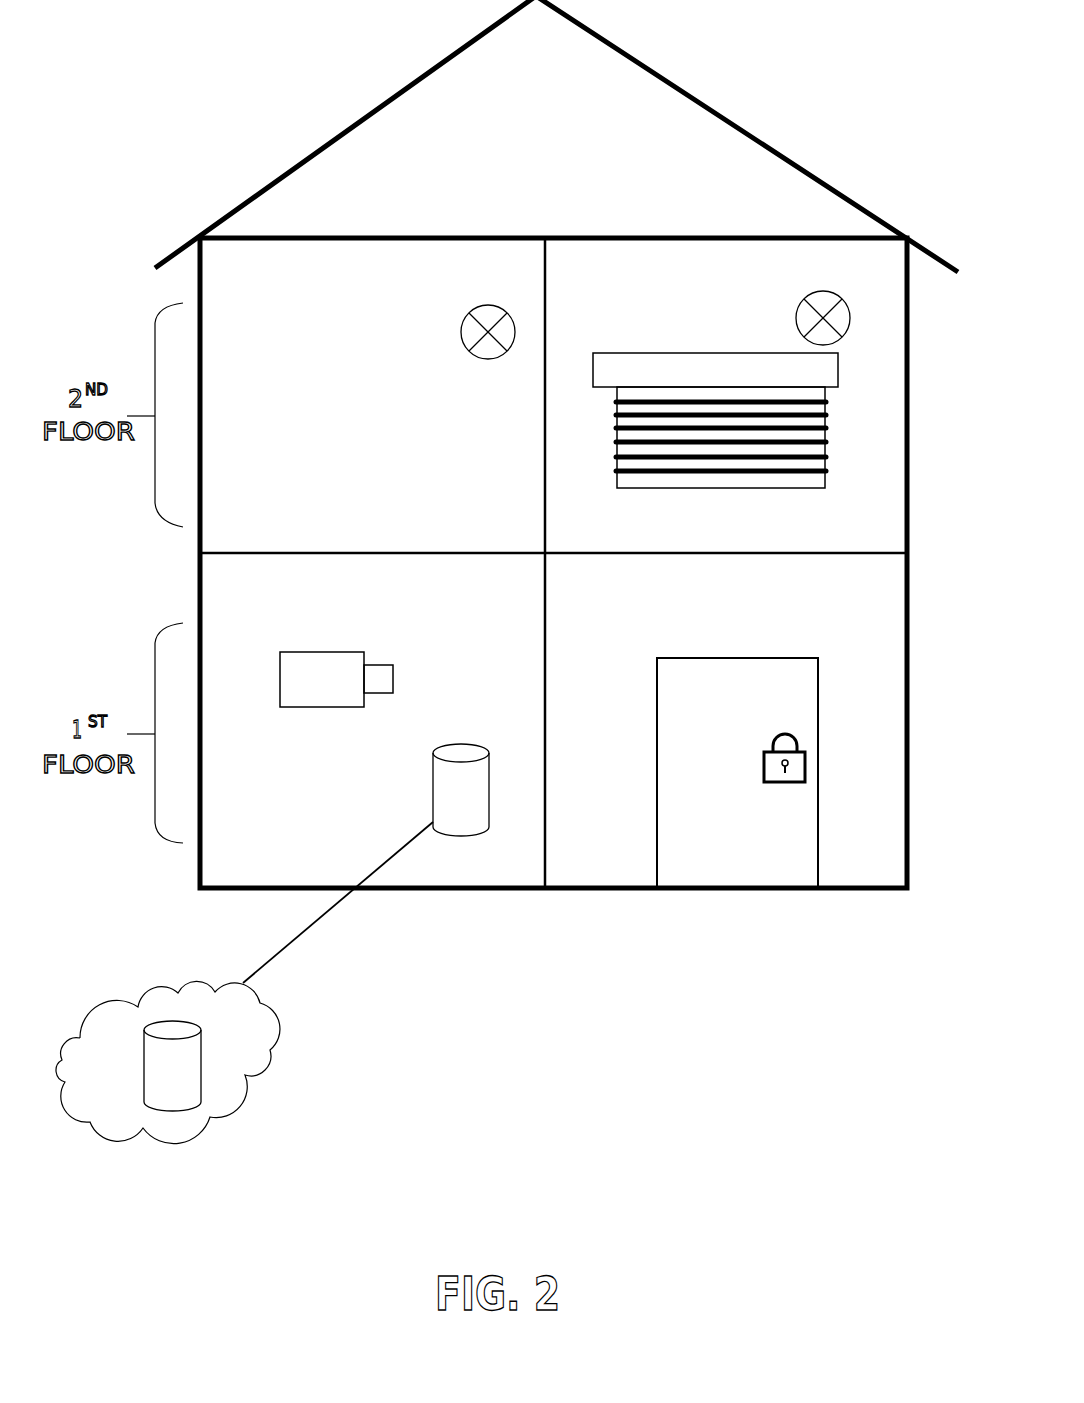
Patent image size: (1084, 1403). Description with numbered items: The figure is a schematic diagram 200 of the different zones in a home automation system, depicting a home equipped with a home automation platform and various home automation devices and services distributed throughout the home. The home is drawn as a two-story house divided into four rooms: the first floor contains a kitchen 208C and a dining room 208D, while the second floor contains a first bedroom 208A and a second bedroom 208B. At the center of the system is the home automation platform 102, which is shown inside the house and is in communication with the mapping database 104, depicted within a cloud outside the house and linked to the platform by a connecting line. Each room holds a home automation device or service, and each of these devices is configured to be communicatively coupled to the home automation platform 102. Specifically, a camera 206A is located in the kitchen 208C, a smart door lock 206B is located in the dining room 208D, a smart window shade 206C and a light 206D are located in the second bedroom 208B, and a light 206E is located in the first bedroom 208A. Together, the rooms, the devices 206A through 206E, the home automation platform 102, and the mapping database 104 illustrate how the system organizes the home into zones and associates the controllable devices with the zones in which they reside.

The diagram 200 is at (892, 1229).
The first bedroom 208A is at (372, 395).
The second bedroom 208B is at (726, 407).
The kitchen 208C is at (391, 720).
The dining room 208D is at (705, 729).
The camera 206A is at (323, 708).
The smart door lock 206B is at (790, 773).
The smart window shade 206C is at (825, 375).
The light 206D is at (825, 288).
The light 206E is at (488, 292).
The home automation platform 102 is at (463, 805).
The mapping database 104 is at (168, 1062).